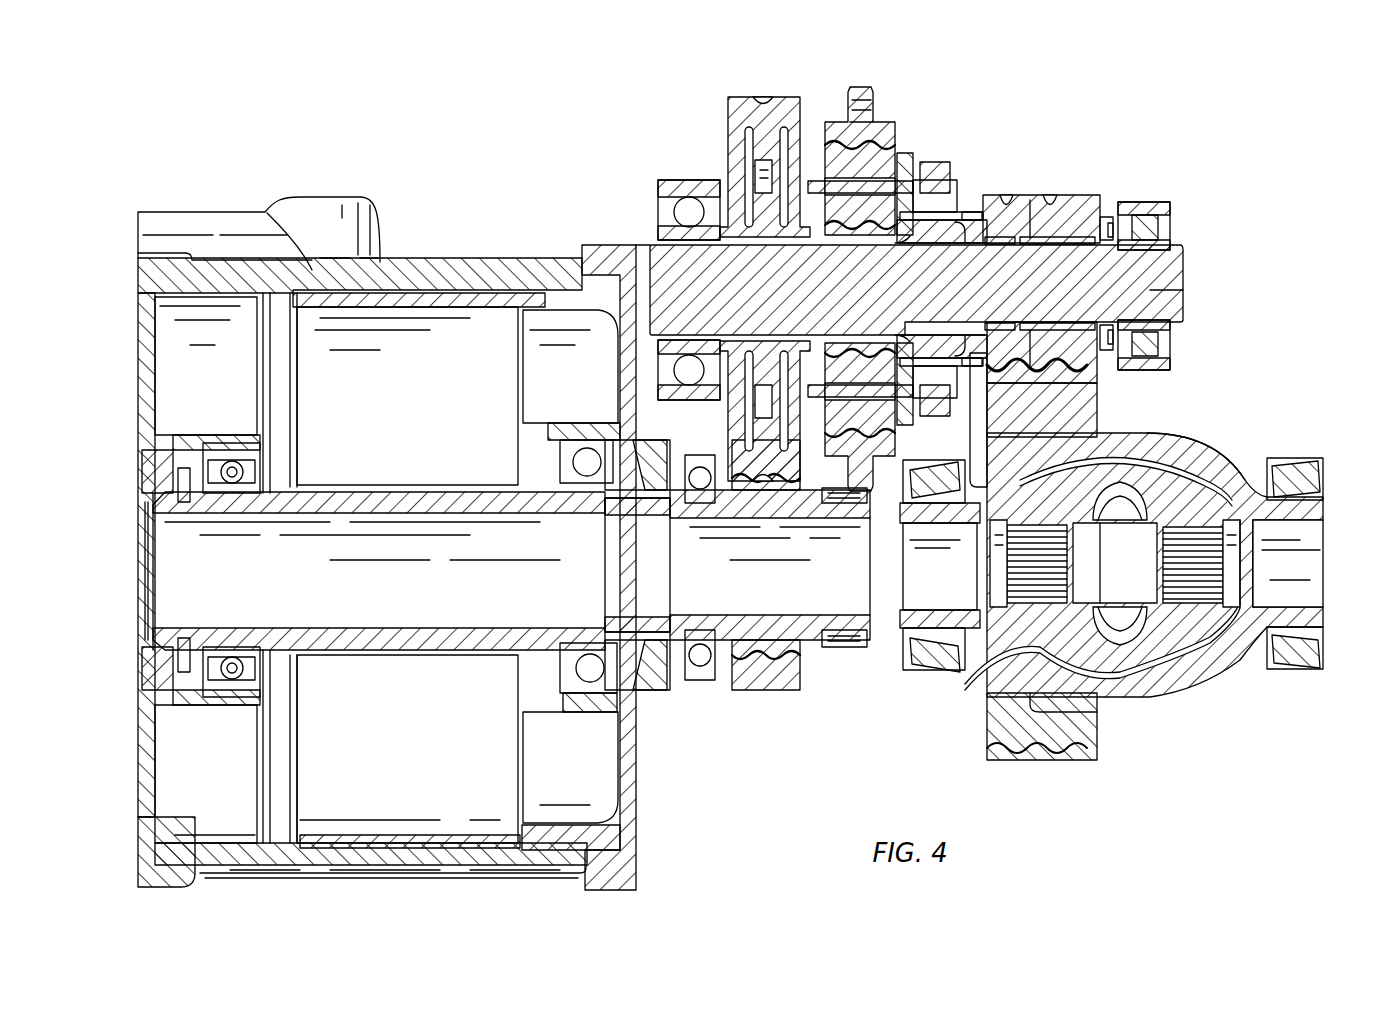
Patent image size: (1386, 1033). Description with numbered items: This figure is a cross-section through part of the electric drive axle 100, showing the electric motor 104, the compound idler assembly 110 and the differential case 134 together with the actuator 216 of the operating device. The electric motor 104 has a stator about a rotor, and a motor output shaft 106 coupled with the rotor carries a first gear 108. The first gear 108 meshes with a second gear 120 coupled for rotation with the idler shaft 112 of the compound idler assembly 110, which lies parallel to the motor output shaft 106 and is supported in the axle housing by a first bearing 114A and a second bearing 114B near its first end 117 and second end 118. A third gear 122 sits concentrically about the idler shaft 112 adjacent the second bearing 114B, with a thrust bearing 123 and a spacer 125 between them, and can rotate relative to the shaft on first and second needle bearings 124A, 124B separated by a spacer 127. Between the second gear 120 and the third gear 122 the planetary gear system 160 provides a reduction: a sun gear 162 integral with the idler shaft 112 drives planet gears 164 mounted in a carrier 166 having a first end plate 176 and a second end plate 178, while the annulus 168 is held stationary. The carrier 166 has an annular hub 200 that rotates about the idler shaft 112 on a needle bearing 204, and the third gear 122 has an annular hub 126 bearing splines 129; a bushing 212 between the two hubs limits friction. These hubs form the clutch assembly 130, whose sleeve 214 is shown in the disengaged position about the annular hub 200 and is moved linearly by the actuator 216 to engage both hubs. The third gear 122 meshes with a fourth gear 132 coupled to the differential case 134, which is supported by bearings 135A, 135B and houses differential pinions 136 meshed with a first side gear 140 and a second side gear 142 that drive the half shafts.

The electric drive axle 100 is at (185, 128).
The electric motor 104 is at (398, 262).
The motor output shaft 106 is at (880, 628).
The first gear 108 is at (812, 658).
The compound idler assembly 110 is at (668, 112).
The idler shaft 112 is at (1182, 245).
The first bearing 114A is at (658, 185).
The second bearing 114B is at (1162, 205).
The first end 117 is at (640, 248).
The second end 118 is at (1192, 285).
The second gear 120 is at (756, 100).
The third gear 122 is at (1012, 215).
The thrust bearing 123 is at (1098, 218).
The first needle bearing 124A is at (993, 245).
The second needle bearing 124B is at (1060, 245).
The spacer 125 is at (1105, 215).
The annular hub 126 is at (962, 215).
The spacer 127 is at (1042, 215).
The splines 129 is at (966, 197).
The clutch assembly 130 is at (975, 30).
The fourth gear 132 is at (1105, 385).
The differential case 134 is at (1195, 440).
The bearing 135A is at (935, 672).
The bearing 135B is at (1303, 668).
The differential pinions 136 is at (1137, 468).
The first side gear 140 is at (1040, 628).
The second side gear 142 is at (1196, 660).
The planetary gear system 160 is at (856, 84).
The sun gear 162 is at (840, 255).
The planet gears 164 is at (826, 140).
The carrier 166 is at (905, 145).
The annulus 168 is at (866, 103).
The first end plate 176 is at (820, 232).
The second end plate 178 is at (908, 152).
The annular hub 200 is at (935, 275).
The needle bearing 204 is at (908, 250).
The bushing 212 is at (962, 200).
The sleeve 214 is at (940, 165).
The actuator 216 is at (935, 182).